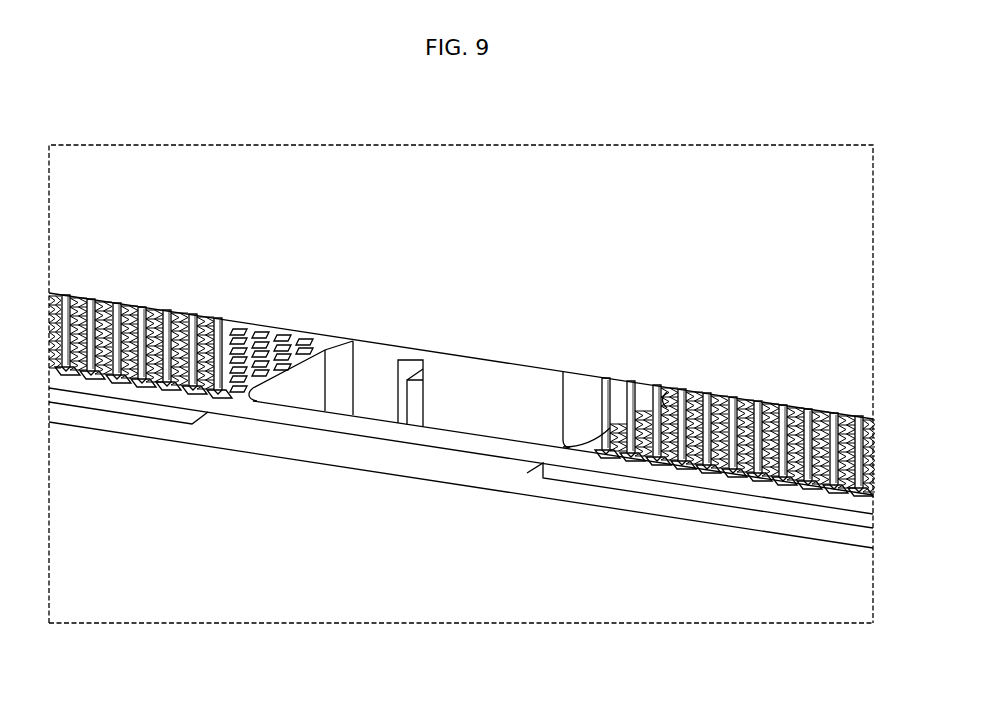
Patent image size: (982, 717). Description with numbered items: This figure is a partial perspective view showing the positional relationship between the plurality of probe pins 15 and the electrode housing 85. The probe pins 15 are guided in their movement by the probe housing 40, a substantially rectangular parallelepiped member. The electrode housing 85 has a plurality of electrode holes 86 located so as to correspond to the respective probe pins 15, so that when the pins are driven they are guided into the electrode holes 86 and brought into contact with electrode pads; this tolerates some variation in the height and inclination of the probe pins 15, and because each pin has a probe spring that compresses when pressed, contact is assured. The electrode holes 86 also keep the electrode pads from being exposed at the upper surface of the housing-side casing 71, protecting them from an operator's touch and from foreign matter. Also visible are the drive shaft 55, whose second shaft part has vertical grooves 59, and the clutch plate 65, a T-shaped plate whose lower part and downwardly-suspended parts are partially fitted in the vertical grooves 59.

The probe pins 15 is at (708, 398).
The probe housing 40 is at (668, 160).
The drive shaft 55 is at (496, 368).
The vertical grooves 59 is at (400, 358).
The clutch plate 65 is at (410, 422).
The housing-side casing 71 is at (562, 612).
The electrode housing 85 is at (735, 485).
The electrode holes 86 is at (783, 484).